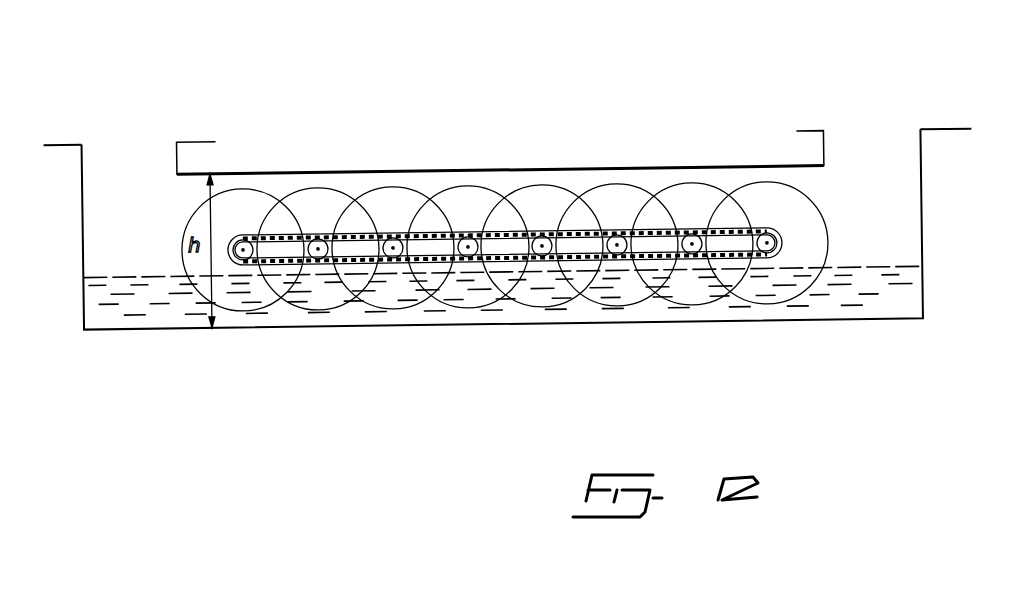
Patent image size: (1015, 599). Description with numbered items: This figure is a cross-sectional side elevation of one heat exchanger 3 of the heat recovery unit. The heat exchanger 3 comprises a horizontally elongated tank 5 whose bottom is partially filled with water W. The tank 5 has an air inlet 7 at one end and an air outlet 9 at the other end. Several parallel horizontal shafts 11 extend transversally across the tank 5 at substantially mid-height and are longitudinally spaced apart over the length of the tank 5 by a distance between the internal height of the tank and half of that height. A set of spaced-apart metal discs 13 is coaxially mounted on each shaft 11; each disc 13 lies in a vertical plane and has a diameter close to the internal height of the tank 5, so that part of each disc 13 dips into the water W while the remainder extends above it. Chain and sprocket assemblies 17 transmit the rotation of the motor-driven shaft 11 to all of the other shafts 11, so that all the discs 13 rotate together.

The heat exchanger 3 is at (742, 169).
The tank 5 is at (922, 233).
The air inlet 7 is at (888, 138).
The air outlet 9 is at (132, 153).
The horizontal shafts 11 is at (312, 256).
The metal discs 13 is at (250, 210).
The chain and sprocket assemblies 17 is at (625, 262).
The water W is at (862, 302).